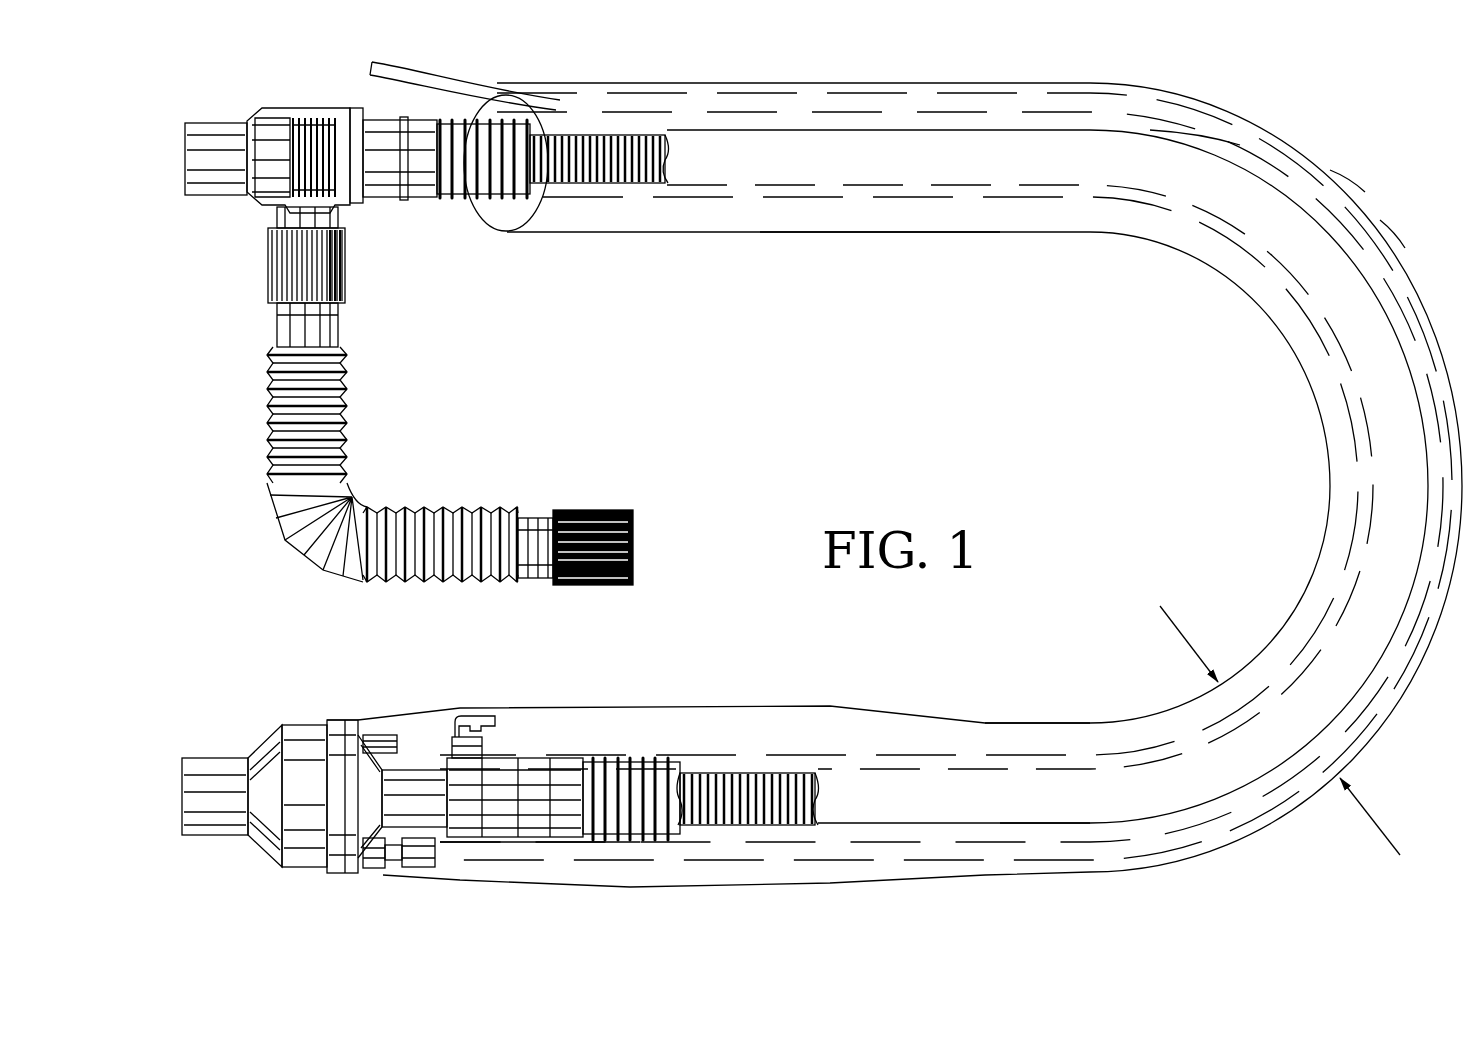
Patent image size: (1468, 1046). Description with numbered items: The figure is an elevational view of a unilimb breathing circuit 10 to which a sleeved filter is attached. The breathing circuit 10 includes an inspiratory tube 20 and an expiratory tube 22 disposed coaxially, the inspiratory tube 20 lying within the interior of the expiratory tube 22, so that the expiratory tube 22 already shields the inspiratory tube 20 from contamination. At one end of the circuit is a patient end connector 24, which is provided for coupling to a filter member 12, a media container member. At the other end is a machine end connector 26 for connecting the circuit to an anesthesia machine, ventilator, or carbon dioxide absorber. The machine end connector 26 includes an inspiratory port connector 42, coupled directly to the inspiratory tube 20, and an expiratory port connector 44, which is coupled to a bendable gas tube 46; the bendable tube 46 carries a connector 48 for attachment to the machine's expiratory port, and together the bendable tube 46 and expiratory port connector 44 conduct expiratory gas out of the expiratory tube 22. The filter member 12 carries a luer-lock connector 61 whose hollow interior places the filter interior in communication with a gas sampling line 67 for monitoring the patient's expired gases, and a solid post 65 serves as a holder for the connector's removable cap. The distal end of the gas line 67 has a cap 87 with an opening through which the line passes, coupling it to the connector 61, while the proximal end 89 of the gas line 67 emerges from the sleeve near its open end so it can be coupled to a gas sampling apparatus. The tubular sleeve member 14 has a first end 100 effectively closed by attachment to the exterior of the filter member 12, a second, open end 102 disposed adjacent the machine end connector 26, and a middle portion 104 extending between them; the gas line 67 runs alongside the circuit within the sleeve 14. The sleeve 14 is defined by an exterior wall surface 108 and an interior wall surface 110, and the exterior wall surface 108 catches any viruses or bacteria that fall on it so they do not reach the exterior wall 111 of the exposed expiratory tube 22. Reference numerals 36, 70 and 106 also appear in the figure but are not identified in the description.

The breathing circuit 10 is at (390, 244).
The filter member 12 is at (276, 712).
The sleeve member 14 is at (1357, 124).
The inspiratory tube 20 is at (643, 135).
The expiratory tube 22 is at (762, 98).
The patient end connector 24 is at (532, 790).
The machine end connector 26 is at (307, 107).
The gas sampling port 36 is at (378, 742).
The inspiratory port connector 42 is at (185, 158).
The expiratory port connector 44 is at (278, 216).
The bendable gas tube 46 is at (342, 483).
The connector 48 is at (583, 510).
The luer-lock connector 61 is at (375, 868).
The solid post 65 is at (398, 740).
The gas sampling line 67 is at (533, 855).
The patient tube 70 is at (222, 758).
The cap 87 is at (432, 866).
The proximal end 89 is at (405, 88).
The first end 100 is at (340, 720).
The second, open end 102 is at (532, 112).
The middle portion 104 is at (1000, 723).
The hose wall section 106 is at (1252, 197).
The exterior wall surface 108 is at (1358, 188).
The interior wall surface 110 is at (1428, 228).
The exterior wall 111 is at (783, 178).